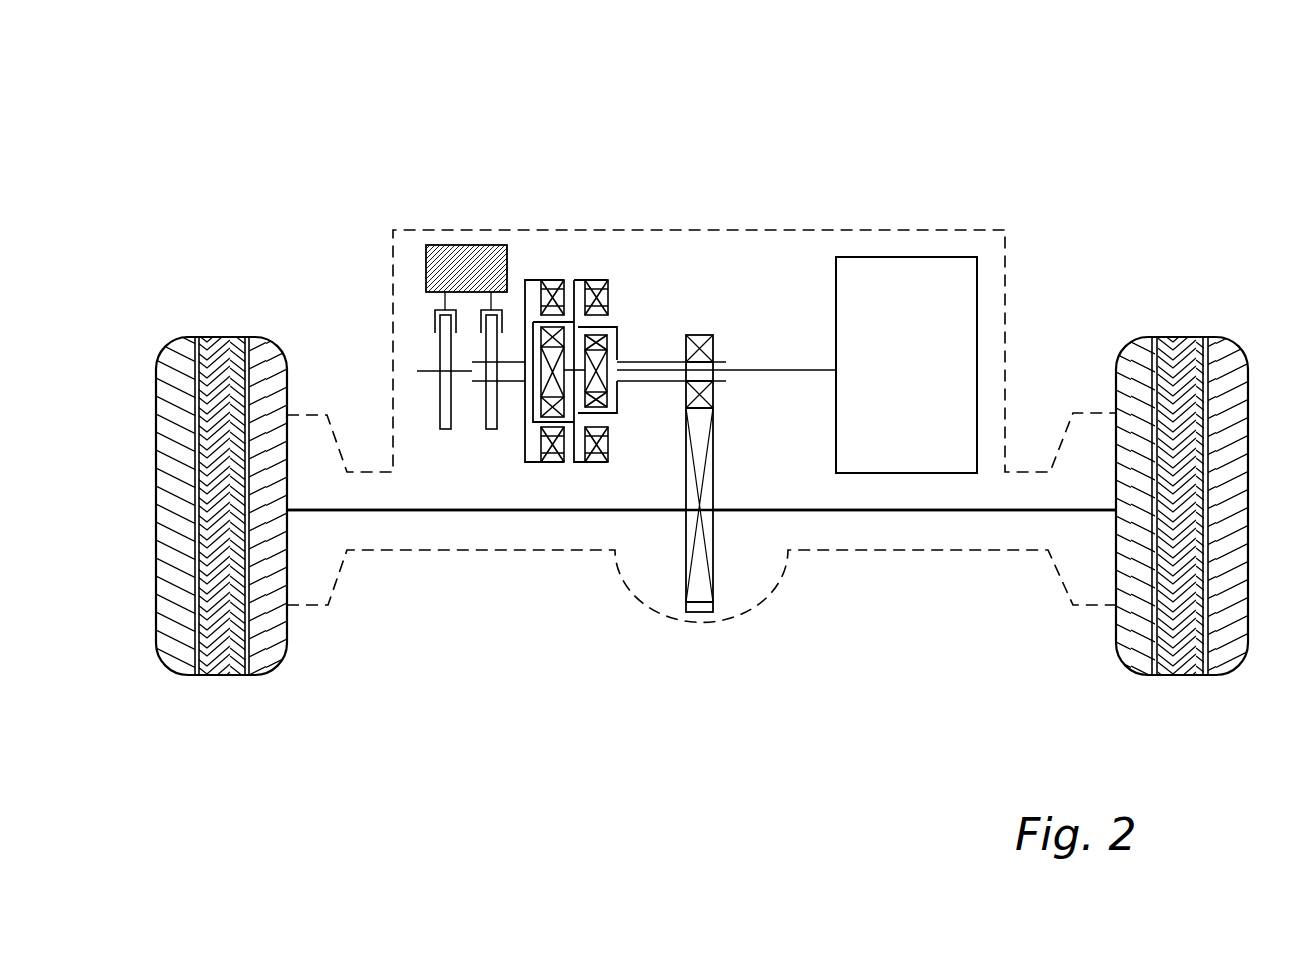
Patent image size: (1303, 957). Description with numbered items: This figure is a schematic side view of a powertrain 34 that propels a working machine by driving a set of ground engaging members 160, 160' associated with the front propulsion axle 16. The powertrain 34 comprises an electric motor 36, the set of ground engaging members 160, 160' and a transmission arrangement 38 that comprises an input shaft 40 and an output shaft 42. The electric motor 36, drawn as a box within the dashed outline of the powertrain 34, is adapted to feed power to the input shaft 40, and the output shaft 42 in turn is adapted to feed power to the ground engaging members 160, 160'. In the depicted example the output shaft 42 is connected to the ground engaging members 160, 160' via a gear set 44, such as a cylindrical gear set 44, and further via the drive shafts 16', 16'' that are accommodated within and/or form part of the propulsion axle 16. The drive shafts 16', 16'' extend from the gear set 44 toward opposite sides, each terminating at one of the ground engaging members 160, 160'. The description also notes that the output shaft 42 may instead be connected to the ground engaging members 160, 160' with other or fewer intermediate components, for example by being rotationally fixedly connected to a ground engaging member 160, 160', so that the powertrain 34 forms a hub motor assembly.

The propulsion axle 16 is at (701, 600).
The drive shaft 16' is at (486, 569).
The drive shaft 16'' is at (914, 600).
The powertrain 34 is at (865, 222).
The electric motor 36 is at (955, 310).
The transmission arrangement 38 is at (575, 262).
The input shaft 40 is at (757, 370).
The output shaft 42 is at (640, 362).
The gear set 44 is at (672, 480).
The ground engaging member 160 is at (303, 526).
The ground engaging member 160' is at (1106, 526).